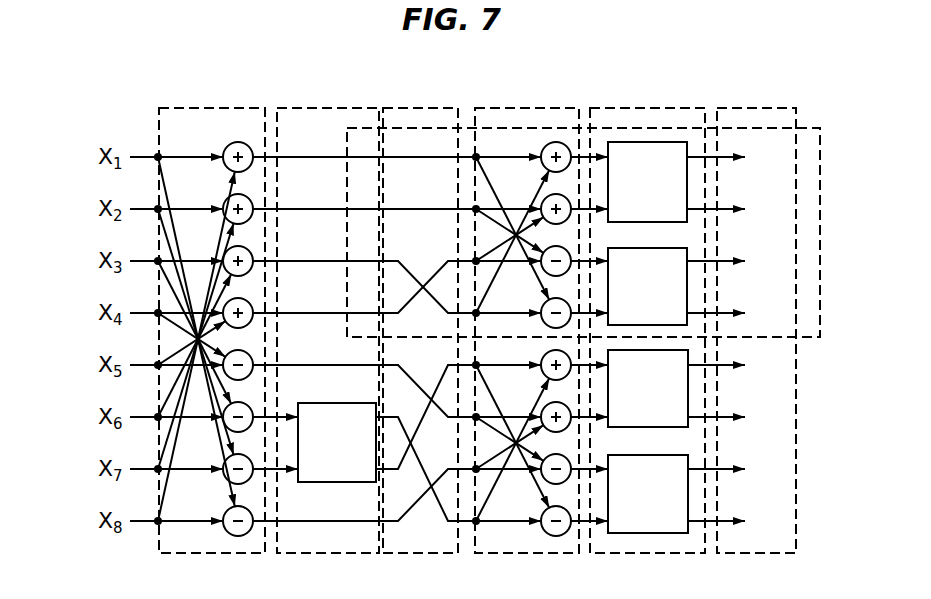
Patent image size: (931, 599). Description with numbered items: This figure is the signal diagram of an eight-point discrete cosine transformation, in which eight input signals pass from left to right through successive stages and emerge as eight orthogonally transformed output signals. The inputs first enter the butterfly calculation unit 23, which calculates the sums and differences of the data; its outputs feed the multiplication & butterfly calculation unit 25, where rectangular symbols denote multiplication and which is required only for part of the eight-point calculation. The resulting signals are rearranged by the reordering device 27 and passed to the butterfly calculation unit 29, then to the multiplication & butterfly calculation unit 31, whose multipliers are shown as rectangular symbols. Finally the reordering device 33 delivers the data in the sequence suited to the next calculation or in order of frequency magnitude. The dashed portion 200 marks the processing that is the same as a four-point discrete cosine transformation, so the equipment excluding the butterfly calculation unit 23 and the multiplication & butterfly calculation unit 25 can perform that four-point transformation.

The butterfly calculation unit 23 is at (208, 108).
The multiplication & butterfly calculation unit 25 is at (333, 108).
The reordering device 27 is at (425, 108).
The butterfly calculation unit 29 is at (520, 108).
The multiplication & butterfly calculation unit 31 is at (643, 108).
The reordering device 33 is at (752, 108).
The processing portion 200 is at (822, 222).